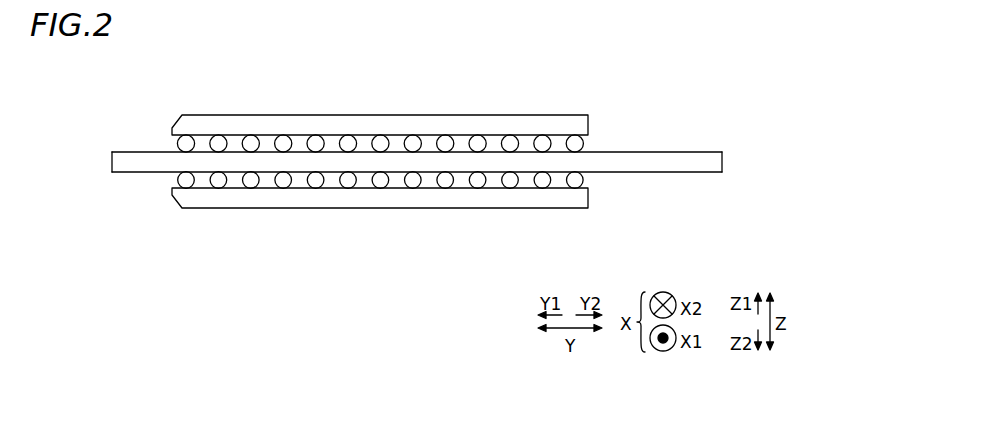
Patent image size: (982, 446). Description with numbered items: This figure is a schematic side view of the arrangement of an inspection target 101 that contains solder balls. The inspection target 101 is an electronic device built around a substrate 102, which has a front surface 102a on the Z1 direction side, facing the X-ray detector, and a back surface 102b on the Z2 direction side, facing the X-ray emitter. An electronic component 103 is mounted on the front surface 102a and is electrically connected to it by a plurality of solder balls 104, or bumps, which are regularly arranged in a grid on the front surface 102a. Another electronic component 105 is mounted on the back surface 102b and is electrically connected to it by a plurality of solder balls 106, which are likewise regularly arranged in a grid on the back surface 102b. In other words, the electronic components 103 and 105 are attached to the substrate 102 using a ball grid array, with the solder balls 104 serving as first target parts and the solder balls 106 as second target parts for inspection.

The inspection target 101 is at (250, 79).
The substrate 102 is at (650, 143).
The front surface 102a is at (700, 152).
The back surface 102b is at (683, 172).
The electronic component 103 is at (408, 115).
The solder balls 104 is at (478, 134).
The electronic component 105 is at (410, 208).
The solder balls 106 is at (583, 190).